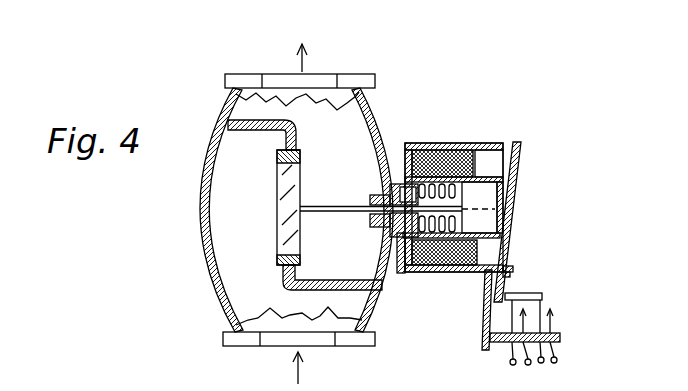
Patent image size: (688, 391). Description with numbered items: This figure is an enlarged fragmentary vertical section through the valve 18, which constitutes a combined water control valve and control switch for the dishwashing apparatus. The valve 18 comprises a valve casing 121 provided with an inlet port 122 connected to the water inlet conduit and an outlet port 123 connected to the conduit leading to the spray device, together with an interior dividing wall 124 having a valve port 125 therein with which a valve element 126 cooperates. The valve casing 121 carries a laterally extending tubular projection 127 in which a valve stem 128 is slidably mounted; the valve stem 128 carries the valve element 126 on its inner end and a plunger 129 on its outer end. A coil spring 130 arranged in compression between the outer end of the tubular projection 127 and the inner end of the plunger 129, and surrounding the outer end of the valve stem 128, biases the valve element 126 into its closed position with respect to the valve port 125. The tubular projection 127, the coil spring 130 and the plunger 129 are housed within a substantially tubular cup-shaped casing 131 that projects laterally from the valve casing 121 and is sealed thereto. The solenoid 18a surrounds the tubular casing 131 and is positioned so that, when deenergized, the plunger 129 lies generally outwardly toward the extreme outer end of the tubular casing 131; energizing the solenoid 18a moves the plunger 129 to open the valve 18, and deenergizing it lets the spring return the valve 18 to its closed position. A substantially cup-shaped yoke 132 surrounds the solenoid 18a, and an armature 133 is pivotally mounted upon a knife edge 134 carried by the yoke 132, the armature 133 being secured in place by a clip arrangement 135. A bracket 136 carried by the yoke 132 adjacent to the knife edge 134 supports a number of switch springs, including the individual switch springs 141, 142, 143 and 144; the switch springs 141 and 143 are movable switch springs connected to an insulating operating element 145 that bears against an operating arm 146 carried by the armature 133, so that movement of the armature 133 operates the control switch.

The valve 18 is at (187, 130).
The solenoid 18a is at (419, 268).
The valve casing 121 is at (272, 210).
The inlet port 122 is at (317, 353).
The outlet port 123 is at (270, 74).
The interior dividing wall 124 is at (220, 133).
The valve port 125 is at (298, 165).
The valve element 126 is at (262, 207).
The tubular projection 127 is at (383, 235).
The valve stem 128 is at (397, 196).
The plunger 129 is at (483, 195).
The coil spring 130 is at (387, 180).
The tubular casing 131 is at (531, 207).
The yoke 132 is at (453, 192).
The armature 133 is at (521, 145).
The knife edge 134 is at (503, 263).
The clip arrangement 135 is at (506, 268).
The bracket 136 is at (483, 330).
The switch spring 141 is at (513, 365).
The switch spring 142 is at (528, 365).
The switch spring 143 is at (541, 363).
The switch spring 144 is at (554, 363).
The insulating operating element 145 is at (554, 308).
The operating arm 146 is at (530, 277).